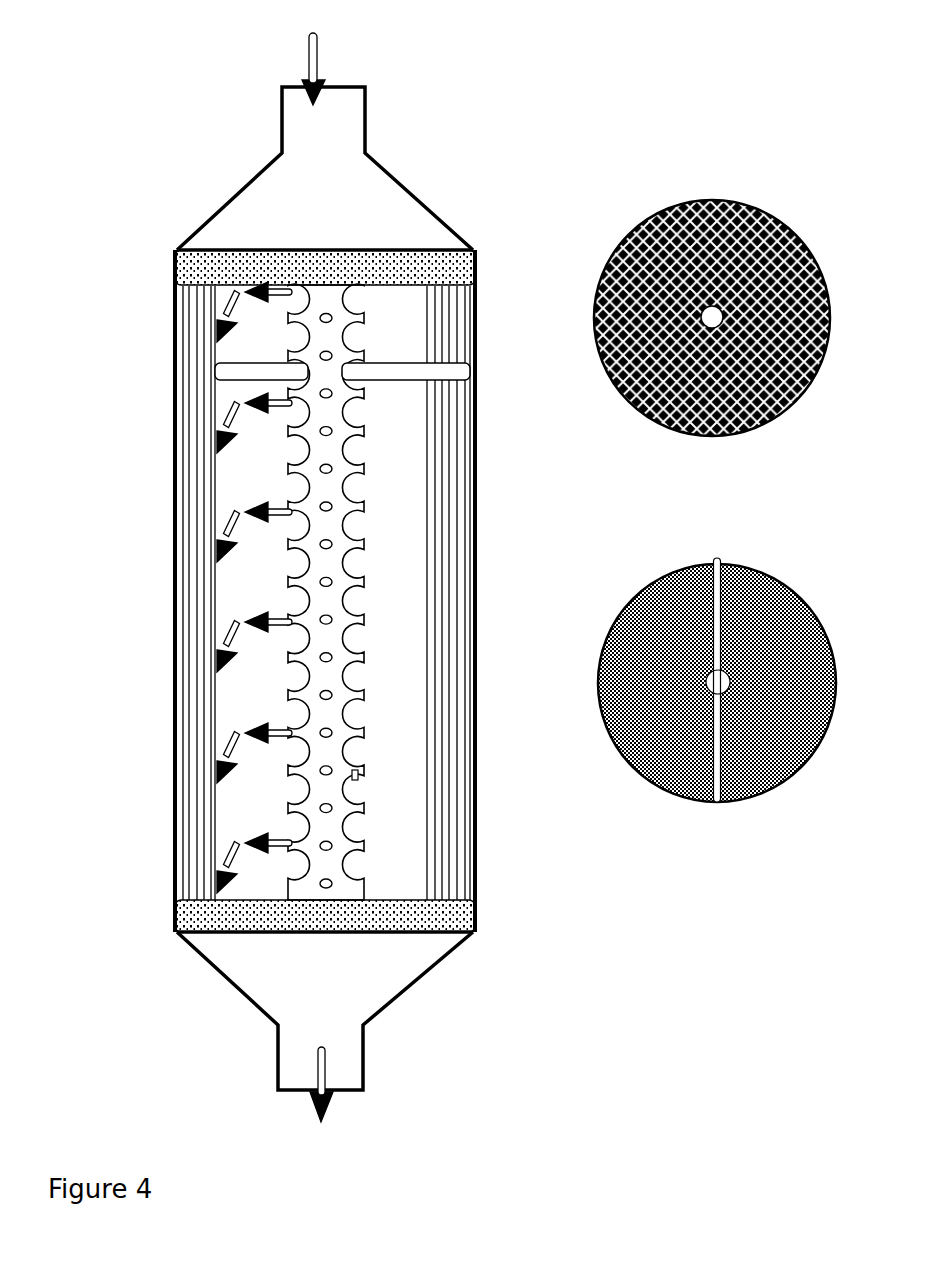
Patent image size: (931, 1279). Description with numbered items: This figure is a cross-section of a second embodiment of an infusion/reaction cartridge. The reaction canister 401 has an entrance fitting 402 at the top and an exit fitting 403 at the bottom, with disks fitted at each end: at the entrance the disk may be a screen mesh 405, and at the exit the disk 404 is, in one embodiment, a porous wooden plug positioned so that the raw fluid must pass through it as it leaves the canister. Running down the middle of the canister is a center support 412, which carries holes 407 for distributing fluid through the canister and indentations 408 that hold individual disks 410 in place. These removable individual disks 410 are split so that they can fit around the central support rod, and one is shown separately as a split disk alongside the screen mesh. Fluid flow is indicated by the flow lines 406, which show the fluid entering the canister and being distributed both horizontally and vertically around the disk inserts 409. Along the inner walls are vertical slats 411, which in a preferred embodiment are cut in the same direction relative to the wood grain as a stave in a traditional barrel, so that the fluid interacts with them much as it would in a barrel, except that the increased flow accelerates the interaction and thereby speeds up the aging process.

The reaction canister 401 is at (173, 592).
The entrance fitting 402 is at (306, 127).
The exit fitting 403 is at (268, 990).
The exit disk 404 is at (174, 912).
The screen mesh 405 is at (637, 240).
The flow lines 406 is at (323, 57).
The holes 407 is at (440, 592).
The indentations 408 is at (360, 528).
The disk inserts 409 is at (232, 381).
The removable individual disks 410 is at (717, 707).
The vertical slats 411 is at (176, 713).
The center support 412 is at (358, 775).